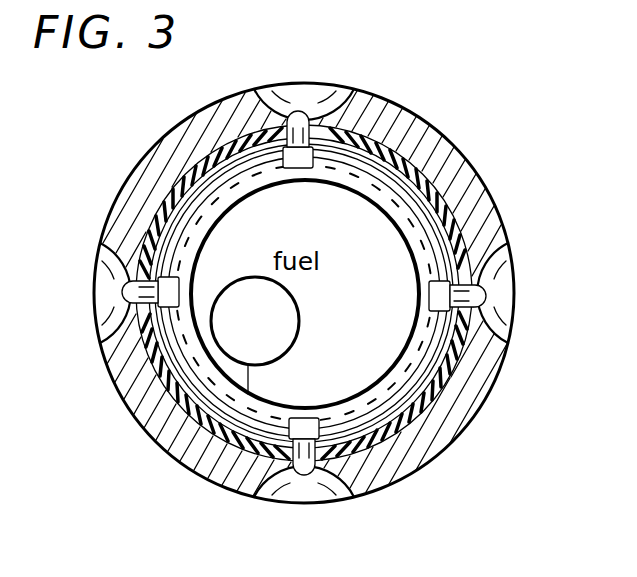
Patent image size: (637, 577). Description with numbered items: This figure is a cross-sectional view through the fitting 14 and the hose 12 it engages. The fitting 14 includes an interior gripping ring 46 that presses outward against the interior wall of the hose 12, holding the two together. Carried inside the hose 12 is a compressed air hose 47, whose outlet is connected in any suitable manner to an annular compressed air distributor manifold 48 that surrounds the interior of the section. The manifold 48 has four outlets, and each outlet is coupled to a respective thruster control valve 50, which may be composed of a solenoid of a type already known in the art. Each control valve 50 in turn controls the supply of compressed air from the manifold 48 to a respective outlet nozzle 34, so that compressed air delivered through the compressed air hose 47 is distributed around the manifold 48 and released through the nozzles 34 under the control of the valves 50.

The hose 12 is at (443, 197).
The fitting 14 is at (503, 218).
The outlet nozzle 34 is at (303, 84).
The interior gripping ring 46 is at (430, 402).
The compressed air hose 47 is at (213, 297).
The annular compressed air distributor manifold 48 is at (203, 203).
The thruster control valve 50 is at (243, 428).